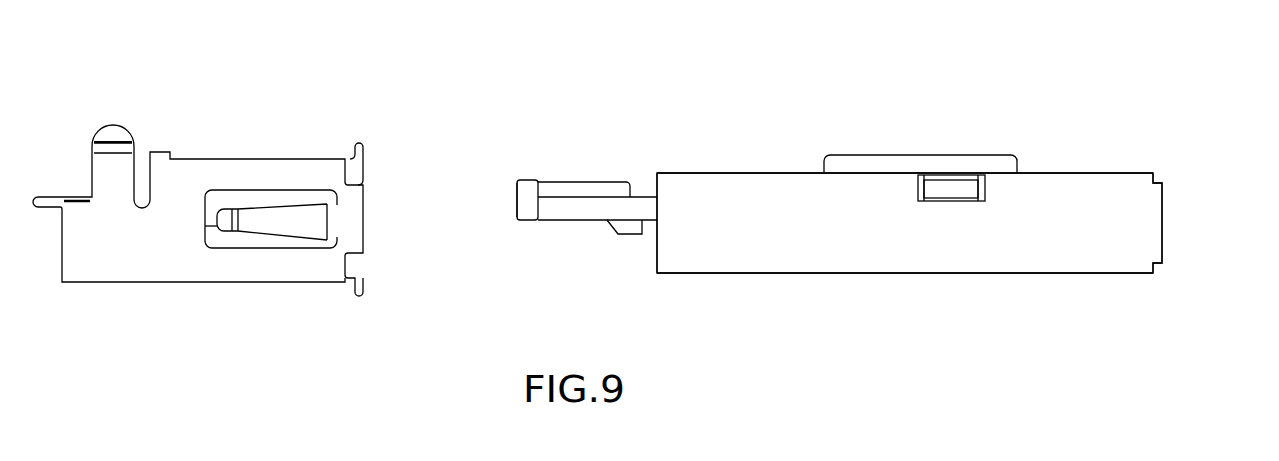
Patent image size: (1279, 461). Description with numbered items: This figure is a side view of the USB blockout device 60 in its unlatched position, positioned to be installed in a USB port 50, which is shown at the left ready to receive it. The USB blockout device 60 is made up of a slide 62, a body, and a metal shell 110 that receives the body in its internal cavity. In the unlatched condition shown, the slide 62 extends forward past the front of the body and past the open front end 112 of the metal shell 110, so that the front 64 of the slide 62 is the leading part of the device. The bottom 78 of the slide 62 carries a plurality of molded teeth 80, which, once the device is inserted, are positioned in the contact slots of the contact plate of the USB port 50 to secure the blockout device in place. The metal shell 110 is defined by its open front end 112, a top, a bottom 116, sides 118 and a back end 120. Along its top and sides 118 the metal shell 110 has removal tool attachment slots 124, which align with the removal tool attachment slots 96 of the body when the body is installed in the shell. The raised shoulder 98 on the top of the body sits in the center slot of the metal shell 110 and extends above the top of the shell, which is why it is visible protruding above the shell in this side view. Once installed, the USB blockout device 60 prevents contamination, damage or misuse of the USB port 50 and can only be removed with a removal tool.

The USB port 50 is at (222, 95).
The USB blockout device 60 is at (853, 190).
The slide 62 is at (518, 180).
The front 64 is at (517, 203).
The bottom 78 is at (570, 222).
The molded teeth 80 is at (618, 234).
The removal tool attachment slots 96 is at (948, 192).
The raised shoulder 98 is at (853, 155).
The metal shell 110 is at (1122, 172).
The open front end 112 is at (655, 178).
The bottom 116 is at (763, 273).
The sides 118 is at (731, 195).
The back end 120 is at (1162, 203).
The removal tool attachment slots 124 is at (985, 192).